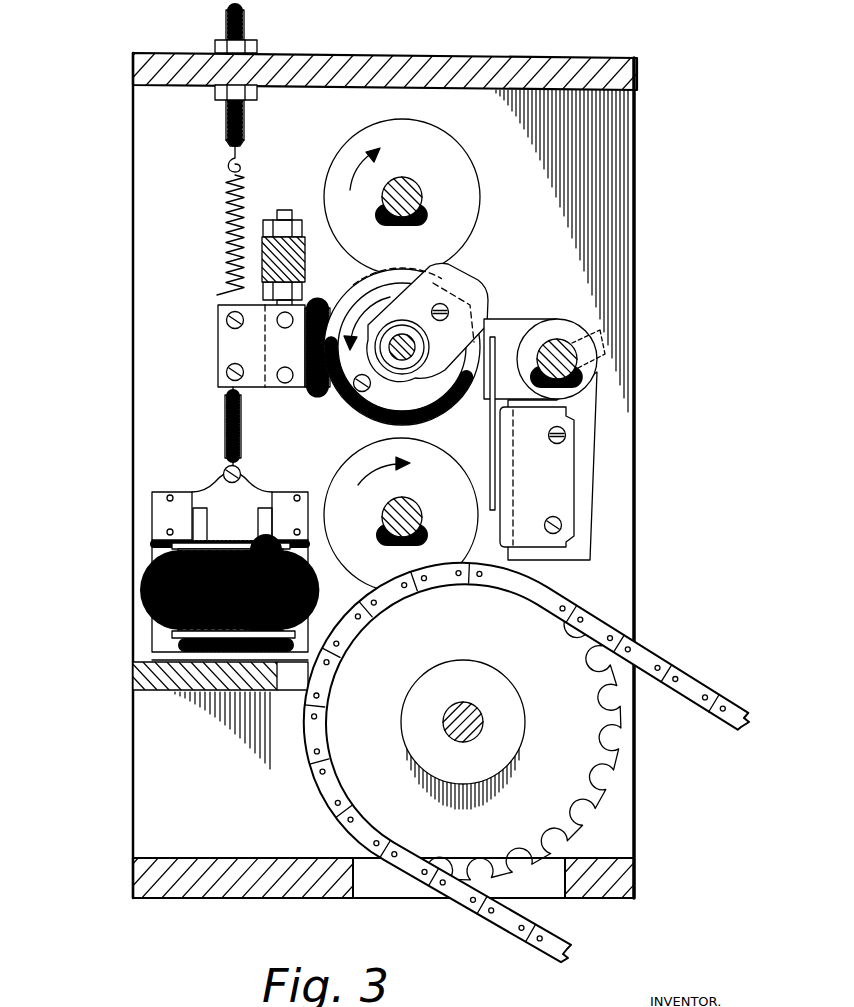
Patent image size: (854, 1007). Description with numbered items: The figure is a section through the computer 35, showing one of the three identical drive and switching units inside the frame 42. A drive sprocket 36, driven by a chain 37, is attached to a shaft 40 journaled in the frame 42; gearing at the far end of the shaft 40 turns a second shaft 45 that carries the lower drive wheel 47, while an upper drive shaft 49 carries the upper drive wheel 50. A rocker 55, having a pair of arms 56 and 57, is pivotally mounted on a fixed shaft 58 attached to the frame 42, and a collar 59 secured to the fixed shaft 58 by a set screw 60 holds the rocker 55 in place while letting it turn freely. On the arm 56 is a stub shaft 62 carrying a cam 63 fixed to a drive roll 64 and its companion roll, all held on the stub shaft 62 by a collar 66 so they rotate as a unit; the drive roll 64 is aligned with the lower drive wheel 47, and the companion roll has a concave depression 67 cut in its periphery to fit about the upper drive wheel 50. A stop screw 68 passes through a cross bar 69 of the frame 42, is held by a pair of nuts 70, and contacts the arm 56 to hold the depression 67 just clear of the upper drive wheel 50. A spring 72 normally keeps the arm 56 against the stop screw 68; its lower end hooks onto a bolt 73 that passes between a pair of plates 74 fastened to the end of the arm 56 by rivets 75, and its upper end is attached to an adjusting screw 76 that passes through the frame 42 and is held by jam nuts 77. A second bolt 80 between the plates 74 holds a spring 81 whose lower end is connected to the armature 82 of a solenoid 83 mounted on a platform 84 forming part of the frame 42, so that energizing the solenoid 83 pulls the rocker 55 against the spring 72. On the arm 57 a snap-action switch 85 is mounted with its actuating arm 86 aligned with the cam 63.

The computer 35 is at (128, 178).
The drive sprocket 36 is at (613, 783).
The drive chain 37 is at (697, 678).
The shaft 40 is at (463, 703).
The frame 42 is at (494, 58).
The second shaft 45 is at (383, 515).
The lower drive wheel 47 is at (338, 470).
The upper drive shaft 49 is at (403, 178).
The upper drive wheel 50 is at (481, 203).
The rocker 55 is at (489, 405).
The arm 56 is at (318, 388).
The arm 57 is at (590, 518).
The fixed shaft 58 is at (560, 342).
The collar 59 is at (590, 356).
The set screw 60 is at (575, 345).
The stub shaft 62 is at (404, 331).
The cam 63 is at (473, 272).
The drive roll 64 is at (357, 411).
The collar 66 is at (432, 338).
The concave depression 67 is at (358, 283).
The stop screw 68 is at (285, 208).
The cross bar 69 is at (306, 246).
The nut 70 is at (305, 227).
The spring 72 is at (226, 230).
The bolt 73 is at (226, 320).
The plate 74 is at (218, 342).
The rivet 75 is at (280, 400).
The adjusting screw 76 is at (225, 113).
The jam nut 77 is at (258, 48).
The second bolt 80 is at (226, 373).
The spring 81 is at (226, 422).
The armature 82 is at (218, 484).
The solenoid 83 is at (285, 592).
The platform 84 is at (163, 693).
The snap-action switch 85 is at (575, 462).
The actuating arm 86 is at (506, 340).